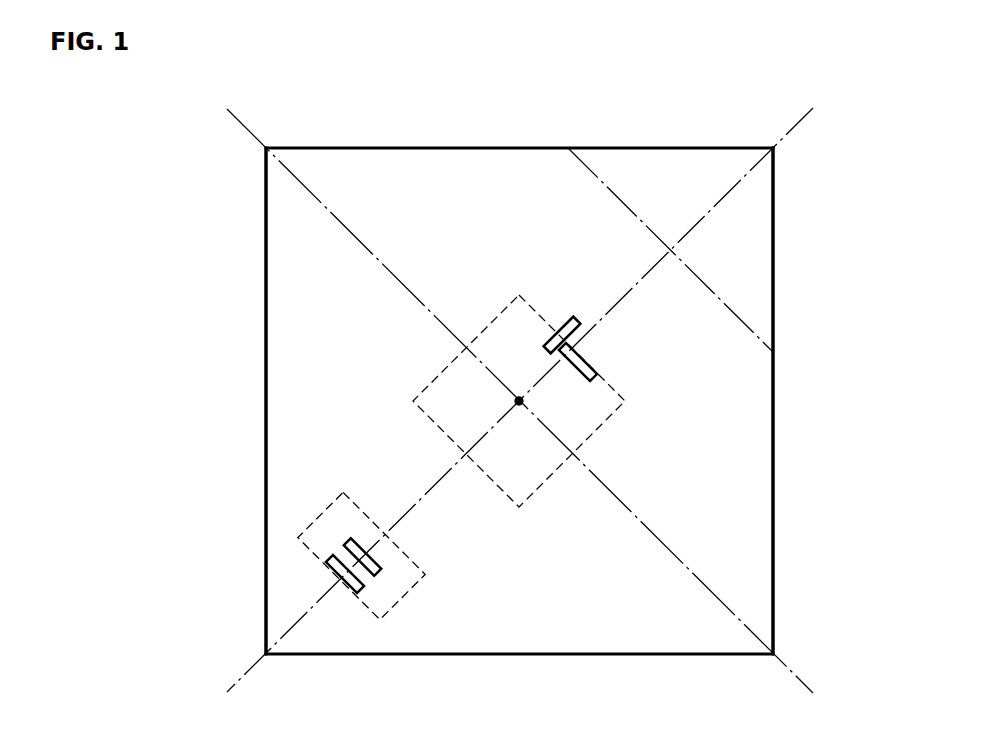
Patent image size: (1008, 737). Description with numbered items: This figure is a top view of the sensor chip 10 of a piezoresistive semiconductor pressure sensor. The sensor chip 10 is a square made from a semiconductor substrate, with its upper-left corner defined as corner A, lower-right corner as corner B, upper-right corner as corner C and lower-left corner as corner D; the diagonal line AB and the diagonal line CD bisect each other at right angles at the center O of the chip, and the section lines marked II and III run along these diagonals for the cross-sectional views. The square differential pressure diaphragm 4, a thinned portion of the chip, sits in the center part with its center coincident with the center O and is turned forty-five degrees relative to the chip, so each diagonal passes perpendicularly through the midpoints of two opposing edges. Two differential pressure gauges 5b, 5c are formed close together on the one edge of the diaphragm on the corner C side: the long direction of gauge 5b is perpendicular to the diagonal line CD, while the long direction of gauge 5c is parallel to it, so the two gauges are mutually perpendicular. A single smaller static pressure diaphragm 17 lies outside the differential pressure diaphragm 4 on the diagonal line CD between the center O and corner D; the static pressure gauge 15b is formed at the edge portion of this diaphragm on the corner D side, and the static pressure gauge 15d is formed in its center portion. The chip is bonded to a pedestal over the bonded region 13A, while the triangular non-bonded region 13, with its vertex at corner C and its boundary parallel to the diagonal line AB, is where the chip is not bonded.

The differential pressure diaphragm 4 is at (537, 330).
The differential pressure gauge 5b is at (591, 359).
The differential pressure gauge 5c is at (578, 328).
The sensor chip 10 is at (755, 463).
The non-bonded region 13 is at (762, 282).
The bonded region 13A is at (283, 498).
The static pressure gauge 15b is at (390, 610).
The static pressure gauge 15d is at (380, 561).
The static pressure diaphragm 17 is at (325, 510).
The center O is at (525, 402).
The corner A is at (278, 135).
The corner B is at (756, 669).
The corner C is at (757, 135).
The corner D is at (278, 669).
The section II- II is at (262, 131).
The section III- III is at (790, 142).